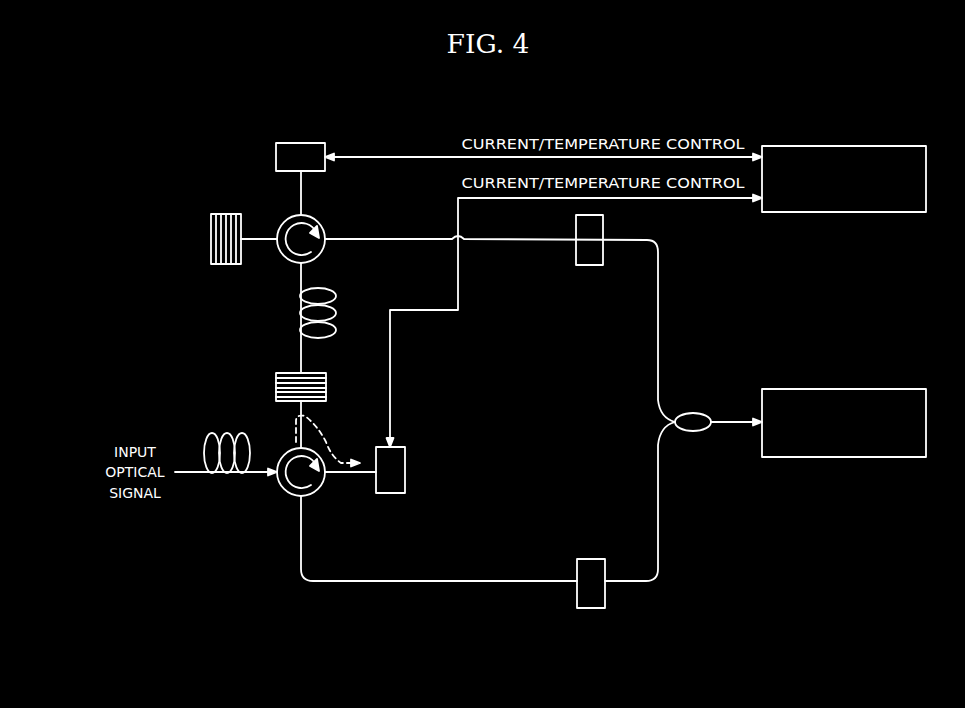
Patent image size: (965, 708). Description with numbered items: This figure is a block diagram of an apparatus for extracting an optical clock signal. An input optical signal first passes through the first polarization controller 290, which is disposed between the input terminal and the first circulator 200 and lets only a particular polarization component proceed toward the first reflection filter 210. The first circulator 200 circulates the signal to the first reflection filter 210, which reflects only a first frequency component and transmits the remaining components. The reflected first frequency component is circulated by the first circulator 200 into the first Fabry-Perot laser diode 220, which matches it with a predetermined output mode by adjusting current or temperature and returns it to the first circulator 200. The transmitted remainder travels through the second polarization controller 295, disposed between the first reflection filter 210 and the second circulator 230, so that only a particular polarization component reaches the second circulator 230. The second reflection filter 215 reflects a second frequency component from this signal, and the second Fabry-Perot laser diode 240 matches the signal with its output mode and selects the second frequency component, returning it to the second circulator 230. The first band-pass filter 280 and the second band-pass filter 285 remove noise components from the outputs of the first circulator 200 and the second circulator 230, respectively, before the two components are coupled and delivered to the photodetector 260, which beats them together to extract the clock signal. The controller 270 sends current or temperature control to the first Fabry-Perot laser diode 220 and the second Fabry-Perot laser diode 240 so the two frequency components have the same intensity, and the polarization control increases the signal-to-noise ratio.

The first circulator 200 is at (318, 490).
The first reflection filter 210 is at (274, 388).
The second reflection filter 215 is at (210, 238).
The first Fabry-Perot laser diode 220 is at (405, 472).
The second circulator 230 is at (318, 222).
The second Fabry-Perot laser diode 240 is at (276, 156).
The photodetector 260 is at (844, 388).
The controller 270 is at (843, 145).
The first band-pass filter 280 is at (590, 608).
The second band-pass filter 285 is at (590, 265).
The first polarization controller 290 is at (226, 474).
The second polarization controller 295 is at (299, 313).